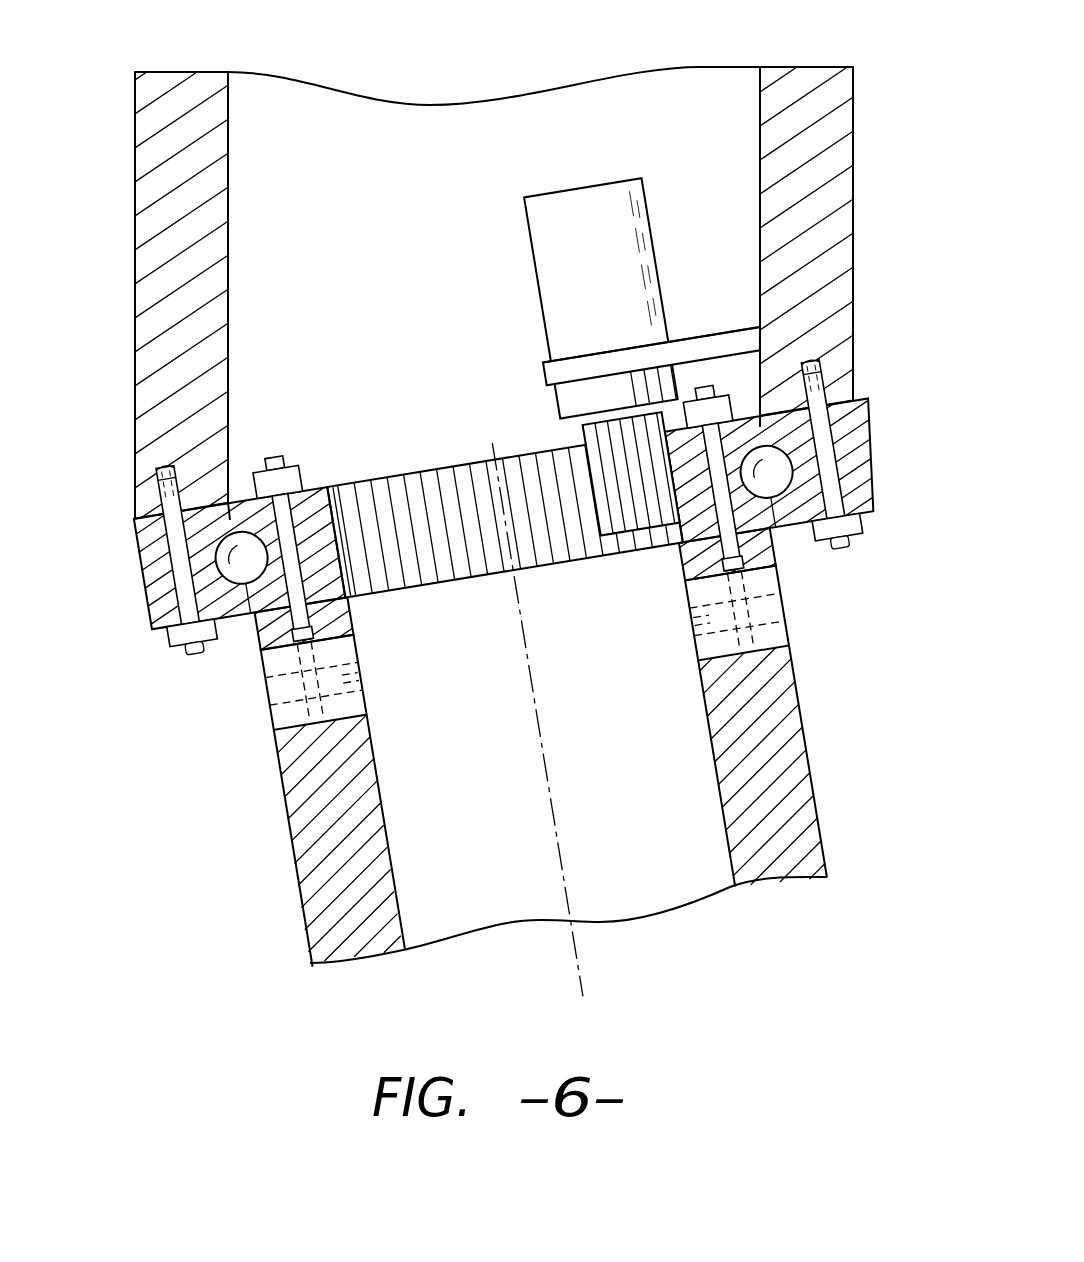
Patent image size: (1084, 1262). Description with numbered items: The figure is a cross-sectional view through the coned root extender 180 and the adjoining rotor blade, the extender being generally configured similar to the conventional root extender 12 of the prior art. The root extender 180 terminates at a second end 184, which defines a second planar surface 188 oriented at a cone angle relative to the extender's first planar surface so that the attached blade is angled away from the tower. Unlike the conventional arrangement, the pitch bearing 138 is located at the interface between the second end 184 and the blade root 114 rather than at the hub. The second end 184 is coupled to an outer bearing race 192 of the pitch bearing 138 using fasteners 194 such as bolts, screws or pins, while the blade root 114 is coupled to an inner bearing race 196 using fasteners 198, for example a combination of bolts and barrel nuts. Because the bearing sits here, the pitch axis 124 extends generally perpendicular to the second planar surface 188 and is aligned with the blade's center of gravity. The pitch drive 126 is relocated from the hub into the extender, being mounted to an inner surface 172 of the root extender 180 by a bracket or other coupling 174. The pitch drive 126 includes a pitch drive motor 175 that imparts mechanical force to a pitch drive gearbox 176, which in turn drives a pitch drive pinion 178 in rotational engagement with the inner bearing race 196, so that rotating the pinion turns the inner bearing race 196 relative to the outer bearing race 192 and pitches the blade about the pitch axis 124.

The conventional root extender 12 is at (518, 819).
The blade root 114 is at (282, 790).
The pitch axis 124 is at (575, 950).
The pitch drive 126 is at (598, 344).
The pitch bearing 138 is at (884, 430).
The inner surface 172 is at (760, 105).
The coupling 174 is at (700, 331).
The pitch drive motor 175 is at (525, 218).
The pitch drive gearbox 176 is at (556, 405).
The pitch drive pinion 178 is at (577, 437).
The root extender 180 is at (459, 265).
The second end 184 is at (116, 144).
The second planar surface 188 is at (385, 475).
The outer bearing race 192 is at (138, 547).
The fasteners 194 is at (162, 594).
The inner bearing race 196 is at (748, 516).
The fasteners 198 is at (787, 623).